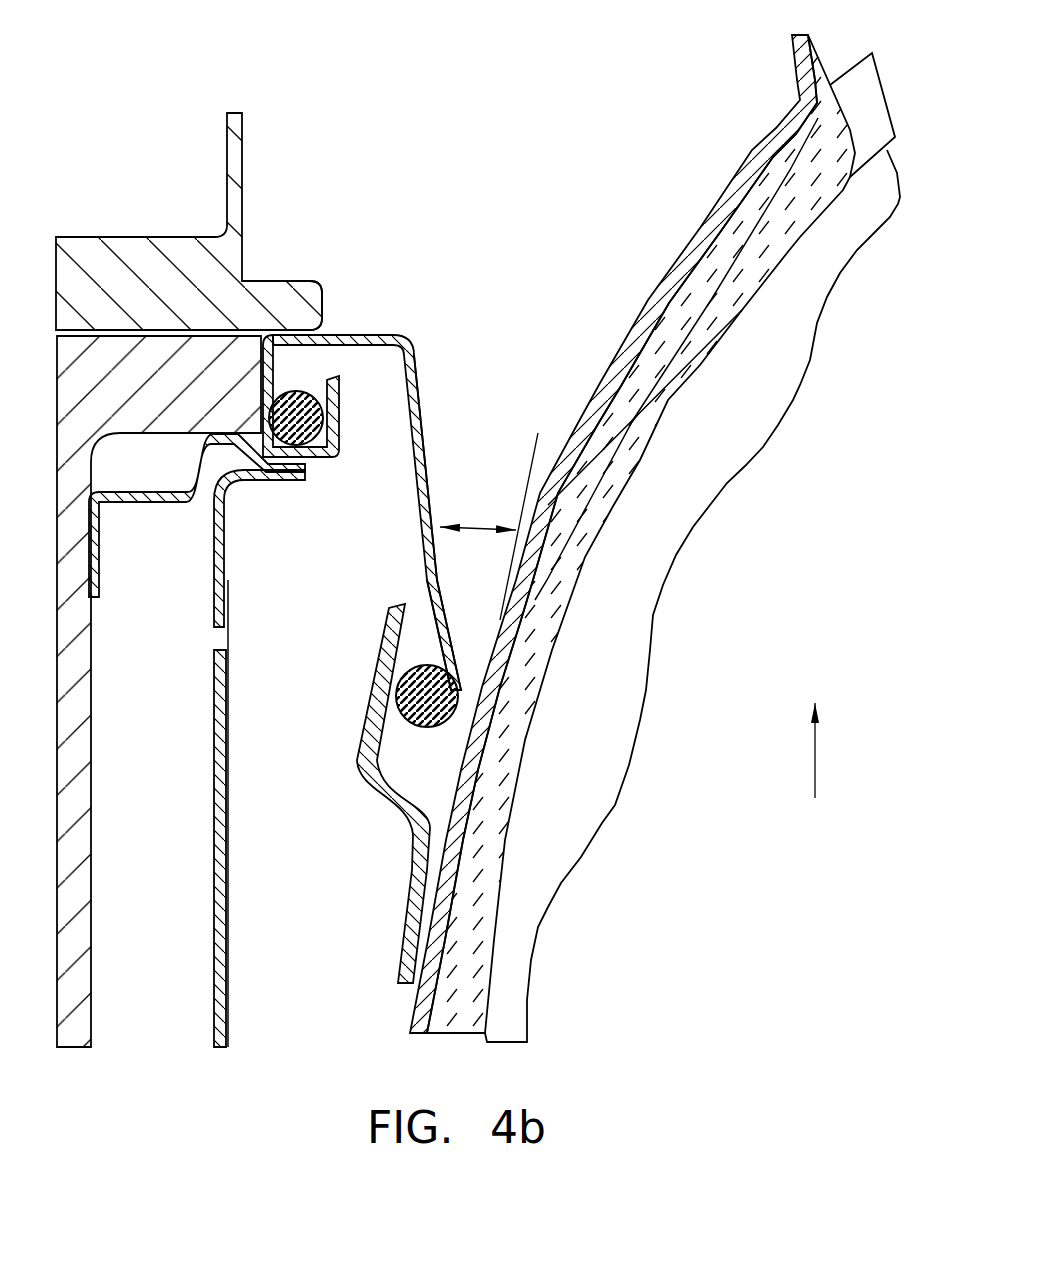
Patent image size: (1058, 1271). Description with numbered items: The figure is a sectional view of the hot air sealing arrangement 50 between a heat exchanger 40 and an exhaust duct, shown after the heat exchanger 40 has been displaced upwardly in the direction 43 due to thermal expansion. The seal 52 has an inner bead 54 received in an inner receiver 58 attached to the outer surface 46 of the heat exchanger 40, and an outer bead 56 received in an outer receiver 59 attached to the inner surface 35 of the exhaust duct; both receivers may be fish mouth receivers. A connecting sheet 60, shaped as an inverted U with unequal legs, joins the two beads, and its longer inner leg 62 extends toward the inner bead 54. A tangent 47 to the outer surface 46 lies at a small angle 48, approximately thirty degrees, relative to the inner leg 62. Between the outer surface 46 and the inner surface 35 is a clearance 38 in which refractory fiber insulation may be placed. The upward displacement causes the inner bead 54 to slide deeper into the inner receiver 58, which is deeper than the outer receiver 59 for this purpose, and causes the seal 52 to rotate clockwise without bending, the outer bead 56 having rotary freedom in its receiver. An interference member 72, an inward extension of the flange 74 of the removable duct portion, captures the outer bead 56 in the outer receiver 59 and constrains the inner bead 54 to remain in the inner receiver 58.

The inner surface 35 is at (93, 750).
The clearance 38 is at (273, 1003).
The heat exchanger 40 is at (655, 538).
The direction 43 is at (815, 762).
The outer surface 46 is at (730, 196).
The tangent 47 is at (531, 465).
The angle 48 is at (468, 527).
The hot air sealing arrangement 50 is at (379, 632).
The seal 52 is at (417, 507).
The inner bead 54 is at (432, 712).
The outer bead 56 is at (305, 422).
The inner receiver 58 is at (360, 738).
The outer receiver 59 is at (335, 470).
The connecting sheet 60 is at (384, 512).
The inner leg 62 is at (433, 568).
The interference member 72 is at (277, 281).
The flange 74 is at (138, 237).